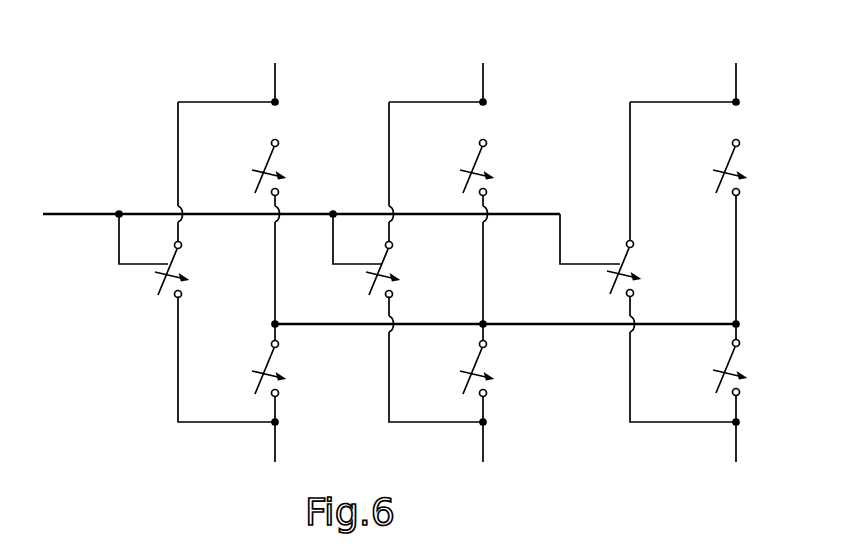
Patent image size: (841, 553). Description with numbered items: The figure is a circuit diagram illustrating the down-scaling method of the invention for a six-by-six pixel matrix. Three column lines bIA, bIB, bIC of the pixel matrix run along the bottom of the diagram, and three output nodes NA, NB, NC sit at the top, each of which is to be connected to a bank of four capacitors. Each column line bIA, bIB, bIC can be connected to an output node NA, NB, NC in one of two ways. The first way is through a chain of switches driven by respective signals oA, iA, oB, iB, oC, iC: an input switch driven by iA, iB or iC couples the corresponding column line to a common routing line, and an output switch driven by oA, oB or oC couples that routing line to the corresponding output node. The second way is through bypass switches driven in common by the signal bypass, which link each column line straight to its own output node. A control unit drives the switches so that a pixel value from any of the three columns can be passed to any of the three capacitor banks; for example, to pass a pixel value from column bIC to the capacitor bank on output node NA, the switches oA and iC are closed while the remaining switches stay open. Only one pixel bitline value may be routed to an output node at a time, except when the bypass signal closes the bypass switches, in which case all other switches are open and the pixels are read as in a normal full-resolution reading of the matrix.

The bypass signal bypass is at (301, 201).
The output node NA is at (273, 67).
The output node NB is at (483, 67).
The output node NC is at (737, 67).
The switch drive signal oA is at (262, 163).
The switch drive signal oB is at (477, 163).
The switch drive signal oC is at (728, 162).
The switch drive signal iA is at (262, 363).
The switch drive signal iB is at (477, 363).
The switch drive signal iC is at (728, 362).
The column line bIA is at (268, 459).
The column line bIB is at (475, 459).
The column line bIC is at (723, 456).